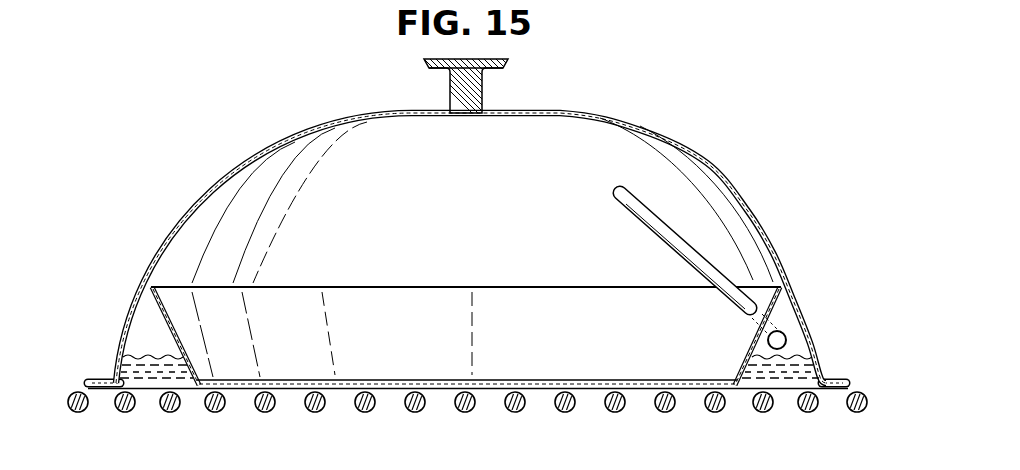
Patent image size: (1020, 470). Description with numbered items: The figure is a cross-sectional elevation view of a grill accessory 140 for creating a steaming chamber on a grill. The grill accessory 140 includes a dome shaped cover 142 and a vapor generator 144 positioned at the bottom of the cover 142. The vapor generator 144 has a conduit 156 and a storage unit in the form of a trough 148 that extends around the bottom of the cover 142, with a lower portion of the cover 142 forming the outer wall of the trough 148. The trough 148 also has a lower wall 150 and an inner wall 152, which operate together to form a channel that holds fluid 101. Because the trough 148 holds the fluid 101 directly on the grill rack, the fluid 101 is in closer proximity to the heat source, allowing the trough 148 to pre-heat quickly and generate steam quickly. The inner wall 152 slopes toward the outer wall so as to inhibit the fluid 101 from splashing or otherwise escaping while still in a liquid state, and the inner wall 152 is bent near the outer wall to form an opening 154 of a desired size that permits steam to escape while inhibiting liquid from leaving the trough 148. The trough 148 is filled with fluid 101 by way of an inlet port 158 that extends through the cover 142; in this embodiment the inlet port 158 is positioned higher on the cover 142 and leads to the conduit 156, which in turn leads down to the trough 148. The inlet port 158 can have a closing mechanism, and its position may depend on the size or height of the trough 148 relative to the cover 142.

The grill accessory 140 is at (695, 90).
The dome shaped cover 142 is at (461, 221).
The vapor generator 144 is at (118, 315).
The trough 148 is at (456, 379).
The lower wall 150 is at (186, 392).
The inner wall 152 is at (181, 347).
The opening 154 is at (148, 275).
The conduit 156 is at (691, 204).
The inlet port 158 is at (617, 188).
The fluid 101 is at (153, 362).